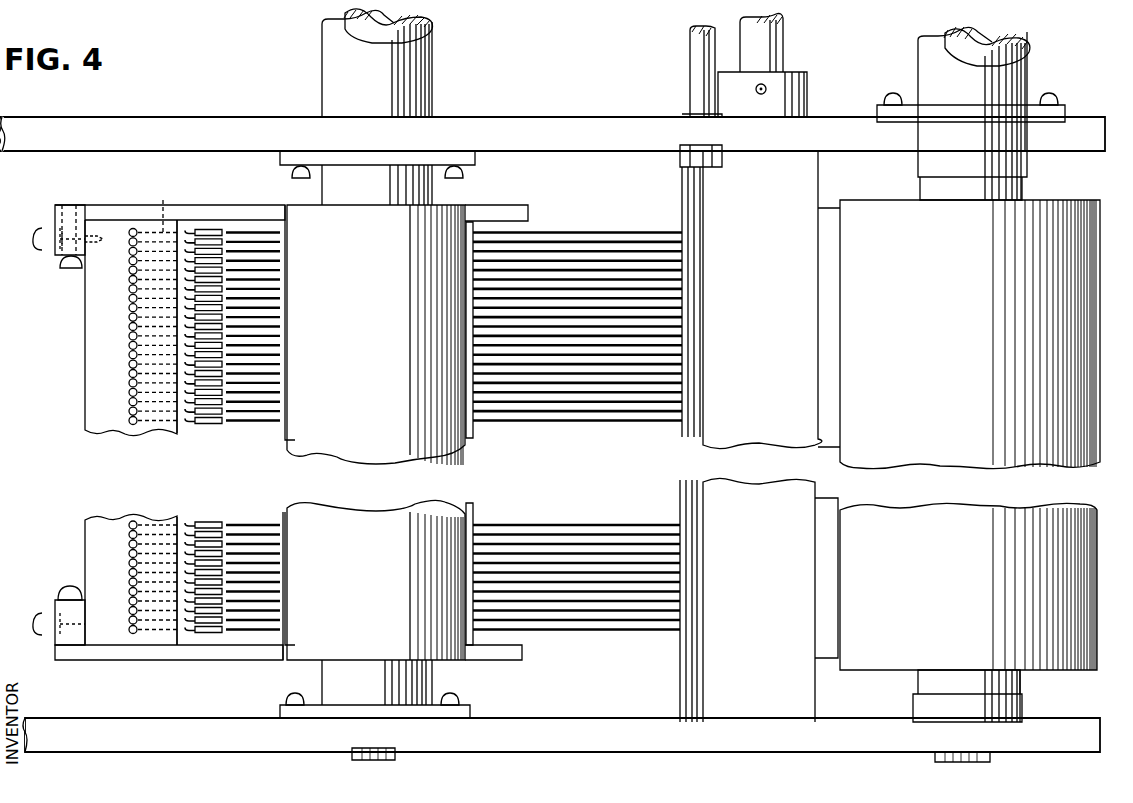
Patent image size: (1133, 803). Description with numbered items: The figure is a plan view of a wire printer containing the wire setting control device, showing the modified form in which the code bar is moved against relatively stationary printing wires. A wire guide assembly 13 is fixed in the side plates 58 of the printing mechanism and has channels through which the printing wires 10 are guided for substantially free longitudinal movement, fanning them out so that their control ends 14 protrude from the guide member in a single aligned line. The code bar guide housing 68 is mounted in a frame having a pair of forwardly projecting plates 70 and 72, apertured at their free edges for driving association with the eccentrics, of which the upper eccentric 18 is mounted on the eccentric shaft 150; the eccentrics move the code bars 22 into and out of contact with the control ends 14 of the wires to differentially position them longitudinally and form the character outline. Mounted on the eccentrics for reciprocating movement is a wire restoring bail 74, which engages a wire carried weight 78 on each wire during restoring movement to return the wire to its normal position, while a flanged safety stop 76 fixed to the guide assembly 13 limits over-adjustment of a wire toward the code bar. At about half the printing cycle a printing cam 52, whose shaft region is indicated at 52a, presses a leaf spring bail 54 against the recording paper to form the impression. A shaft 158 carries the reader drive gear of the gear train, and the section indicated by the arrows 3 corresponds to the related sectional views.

The printing wire 10 is at (262, 432).
The wire guide assembly 13 is at (577, 413).
The control end 14 is at (176, 205).
The eccentric 18 is at (368, 290).
The code bar 22 is at (134, 230).
The printing cam 52 is at (925, 250).
The shaft 52a is at (947, 43).
The leaf spring bail 54 is at (775, 219).
The side plate 58 is at (520, 118).
The code bar guide housing 68 is at (94, 325).
The forwardly projecting plate 70 is at (204, 217).
The forwardly projecting plate 72 is at (165, 652).
The wire restoring bail 74 is at (235, 229).
The flanged safety stop 76 is at (187, 432).
The wire carried weight 78 is at (213, 432).
The eccentric shaft 150 is at (330, 21).
The shaft 158 is at (786, 50).
The section line 3- 3 is at (118, 247).